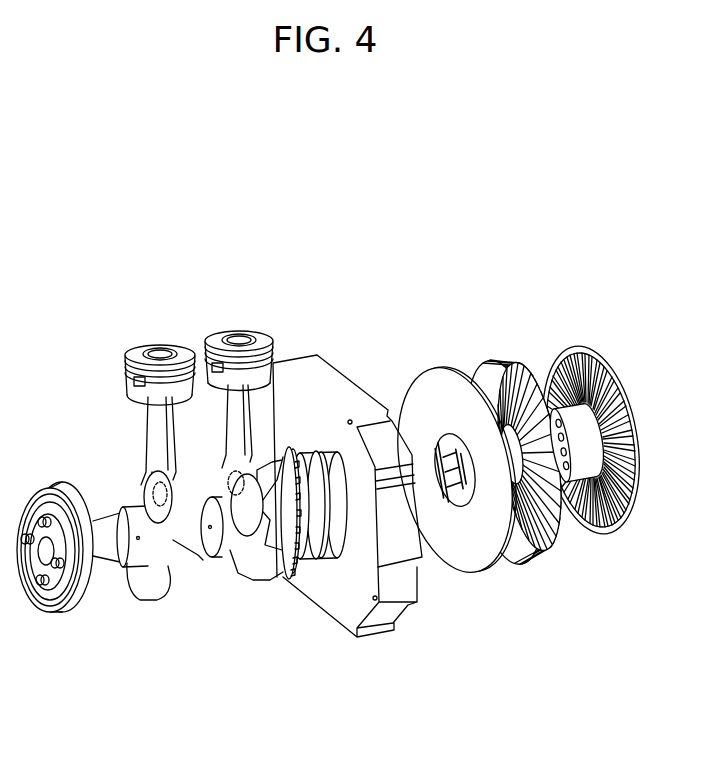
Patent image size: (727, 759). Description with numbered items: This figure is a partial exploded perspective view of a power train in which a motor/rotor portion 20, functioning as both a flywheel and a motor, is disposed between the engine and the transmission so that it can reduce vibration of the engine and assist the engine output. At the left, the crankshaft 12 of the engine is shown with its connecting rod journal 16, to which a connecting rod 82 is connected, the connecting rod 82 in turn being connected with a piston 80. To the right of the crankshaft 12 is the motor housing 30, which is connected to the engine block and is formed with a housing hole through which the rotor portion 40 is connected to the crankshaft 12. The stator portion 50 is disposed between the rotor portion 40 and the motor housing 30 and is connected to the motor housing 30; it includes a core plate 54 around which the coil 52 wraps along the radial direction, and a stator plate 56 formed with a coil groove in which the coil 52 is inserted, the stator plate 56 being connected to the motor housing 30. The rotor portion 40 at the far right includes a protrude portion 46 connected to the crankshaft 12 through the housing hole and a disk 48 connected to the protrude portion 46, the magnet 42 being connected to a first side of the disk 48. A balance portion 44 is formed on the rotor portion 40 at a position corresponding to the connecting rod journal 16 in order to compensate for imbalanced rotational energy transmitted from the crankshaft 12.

The crankshaft 12 is at (140, 592).
The connecting rod journal 16 is at (232, 557).
The motor/rotor portion 20 is at (567, 481).
The motor housing 30 is at (375, 636).
The rotor portion 40 is at (604, 428).
The magnet 42 is at (607, 398).
The balance portion 44 is at (617, 388).
The protrude portion 46 is at (568, 418).
The disk 48 is at (637, 444).
The stator portion 50 is at (513, 476).
The coil 52 is at (500, 362).
The core plate 54 is at (530, 380).
The stator plate 56 is at (450, 367).
The piston 80 is at (220, 338).
The connecting rod 82 is at (240, 430).